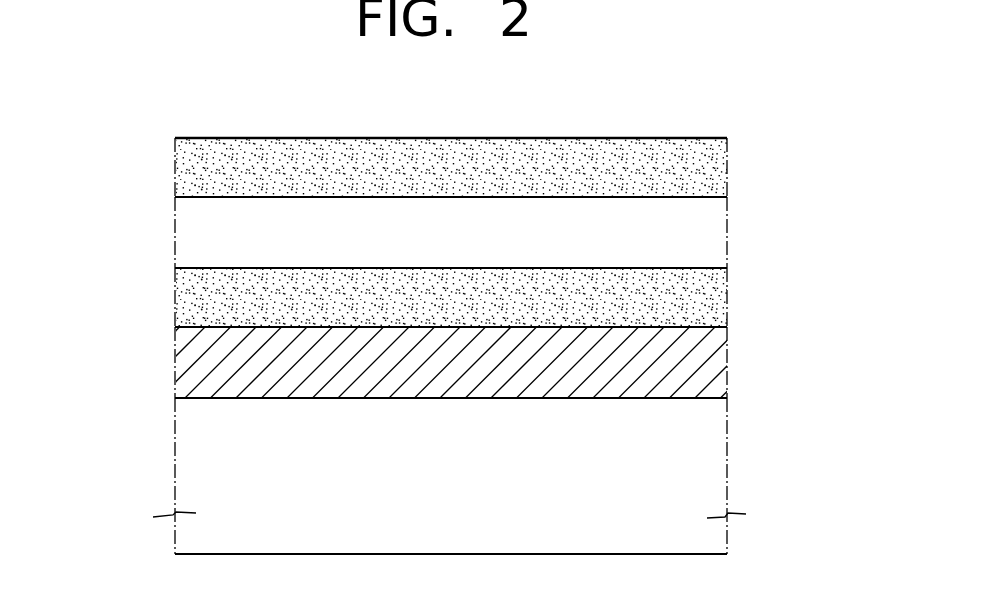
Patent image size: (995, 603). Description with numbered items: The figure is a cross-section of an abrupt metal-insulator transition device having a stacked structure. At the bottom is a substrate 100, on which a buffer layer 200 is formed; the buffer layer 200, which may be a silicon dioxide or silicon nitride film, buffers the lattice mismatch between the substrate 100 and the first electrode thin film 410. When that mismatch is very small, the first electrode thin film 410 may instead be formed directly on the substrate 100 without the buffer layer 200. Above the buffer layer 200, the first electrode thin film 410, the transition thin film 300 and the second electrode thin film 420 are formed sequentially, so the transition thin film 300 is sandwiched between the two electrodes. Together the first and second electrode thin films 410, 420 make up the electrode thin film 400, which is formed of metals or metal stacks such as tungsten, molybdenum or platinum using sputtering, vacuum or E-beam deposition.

The substrate 100 is at (716, 470).
The buffer layer 200 is at (716, 364).
The transition thin film 300 is at (716, 237).
The electrode thin film 400 is at (86, 169).
The first electrode thin film 410 is at (186, 293).
The second electrode thin film 420 is at (186, 170).